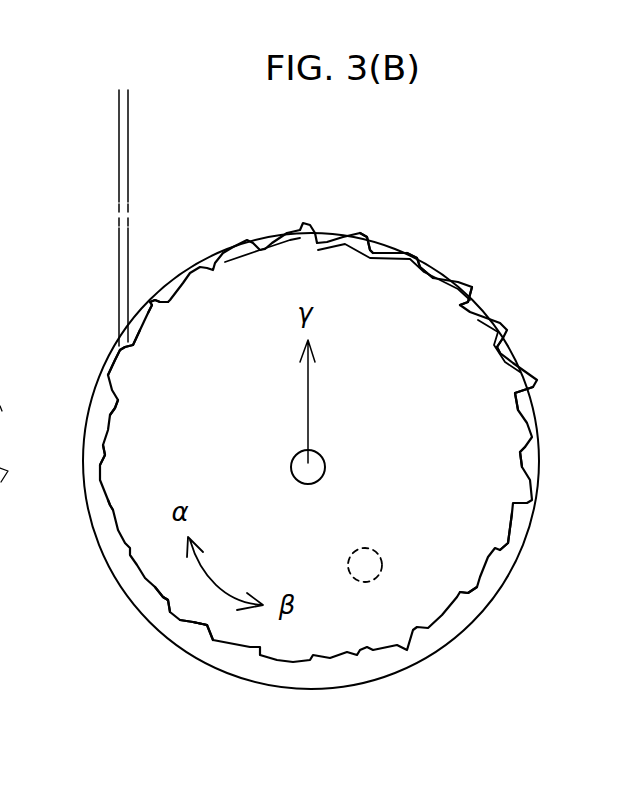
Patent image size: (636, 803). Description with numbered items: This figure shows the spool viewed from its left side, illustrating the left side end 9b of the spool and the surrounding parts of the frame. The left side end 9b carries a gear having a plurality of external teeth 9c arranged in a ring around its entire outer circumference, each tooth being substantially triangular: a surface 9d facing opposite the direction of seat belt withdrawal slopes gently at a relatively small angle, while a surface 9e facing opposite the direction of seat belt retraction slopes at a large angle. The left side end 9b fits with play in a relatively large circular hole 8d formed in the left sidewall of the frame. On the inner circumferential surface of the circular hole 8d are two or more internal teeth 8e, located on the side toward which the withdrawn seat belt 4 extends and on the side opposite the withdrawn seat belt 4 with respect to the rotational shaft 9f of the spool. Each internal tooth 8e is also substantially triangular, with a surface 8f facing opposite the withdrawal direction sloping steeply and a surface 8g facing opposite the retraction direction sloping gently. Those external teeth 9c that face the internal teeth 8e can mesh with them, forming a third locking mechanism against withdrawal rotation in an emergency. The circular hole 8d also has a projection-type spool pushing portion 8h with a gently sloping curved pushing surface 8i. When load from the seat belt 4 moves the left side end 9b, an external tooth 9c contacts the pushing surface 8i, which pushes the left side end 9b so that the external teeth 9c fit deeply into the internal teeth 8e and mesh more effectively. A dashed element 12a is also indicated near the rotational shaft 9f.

The seat belt 4 is at (128, 133).
The circular hole 8d is at (427, 655).
The internal teeth 8e is at (367, 162).
The surface of internal tooth 8f is at (365, 255).
The surface of internal tooth 8g is at (392, 262).
The spool pushing portion 8h is at (146, 300).
The pushing surface 8i is at (133, 340).
The left side end of spool 9b is at (251, 501).
The external teeth 9c is at (127, 362).
The surface of external tooth 9d is at (193, 623).
The surface of external tooth 9e is at (165, 598).
The rotational shaft 9f is at (317, 463).
The pin 12a is at (383, 562).